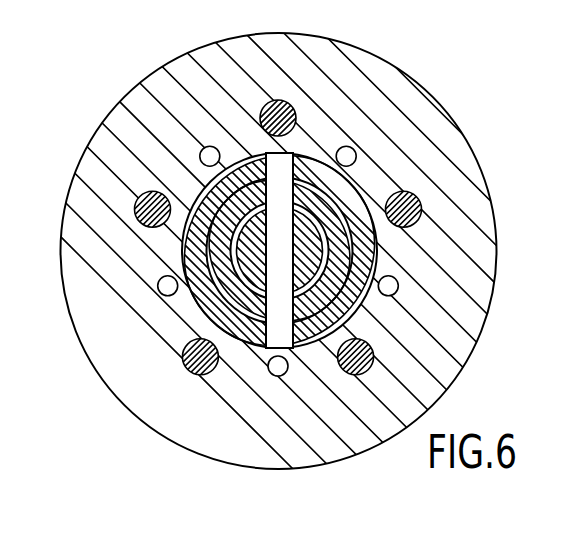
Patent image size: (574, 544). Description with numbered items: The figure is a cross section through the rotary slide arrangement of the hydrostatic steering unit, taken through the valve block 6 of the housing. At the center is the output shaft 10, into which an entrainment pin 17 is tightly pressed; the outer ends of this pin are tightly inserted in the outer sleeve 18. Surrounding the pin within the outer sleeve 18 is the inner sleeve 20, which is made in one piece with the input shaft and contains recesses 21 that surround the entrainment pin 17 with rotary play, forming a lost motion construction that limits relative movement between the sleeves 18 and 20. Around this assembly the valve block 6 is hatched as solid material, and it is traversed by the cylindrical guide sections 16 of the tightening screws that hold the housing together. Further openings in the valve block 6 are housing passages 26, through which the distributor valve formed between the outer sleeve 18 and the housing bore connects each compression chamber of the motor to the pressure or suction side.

The valve block 6 is at (388, 59).
The output shaft 10 is at (325, 263).
The cylindrical guide sections 16 is at (418, 197).
The entrainment pin 17 is at (270, 264).
The outer sleeve 18 is at (335, 200).
The inner sleeve 20 is at (362, 190).
The recesses 21 is at (246, 165).
The housing passage 26 is at (274, 348).